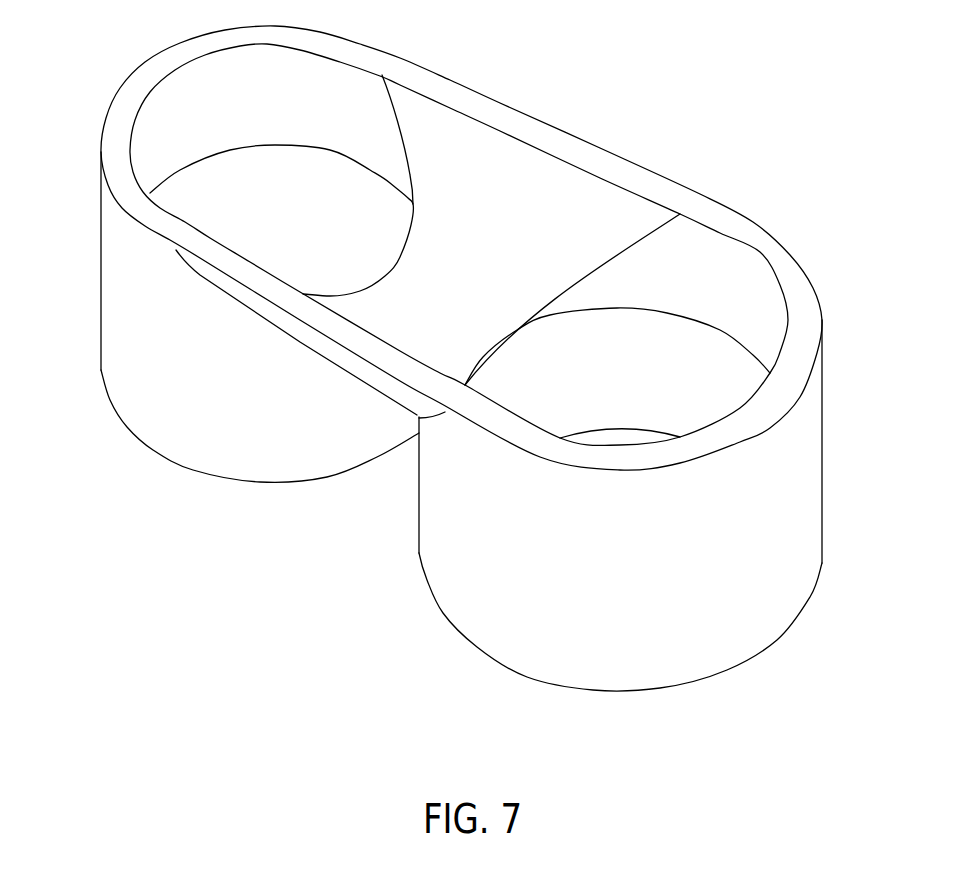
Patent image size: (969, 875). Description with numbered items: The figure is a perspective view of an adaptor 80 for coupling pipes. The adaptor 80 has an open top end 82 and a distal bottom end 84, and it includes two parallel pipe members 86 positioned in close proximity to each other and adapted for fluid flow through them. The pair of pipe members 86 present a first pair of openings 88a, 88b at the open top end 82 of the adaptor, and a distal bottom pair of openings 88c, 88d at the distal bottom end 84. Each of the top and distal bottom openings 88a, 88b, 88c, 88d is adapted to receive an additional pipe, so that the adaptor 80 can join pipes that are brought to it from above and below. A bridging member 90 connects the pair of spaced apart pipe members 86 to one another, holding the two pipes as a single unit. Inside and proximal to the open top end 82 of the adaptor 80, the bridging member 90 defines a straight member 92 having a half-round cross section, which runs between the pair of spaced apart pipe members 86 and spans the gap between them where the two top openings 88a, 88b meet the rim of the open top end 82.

The adaptor 80 is at (645, 93).
The open top end 82 is at (447, 90).
The distal bottom end 84 is at (405, 534).
The pipe members 86 is at (449, 421).
The first top opening 88a is at (327, 95).
The second top opening 88b is at (713, 283).
The first distal bottom opening 88c is at (153, 450).
The second distal bottom opening 88d is at (443, 614).
The bridging member 90 is at (368, 393).
The straight member 92 is at (464, 294).